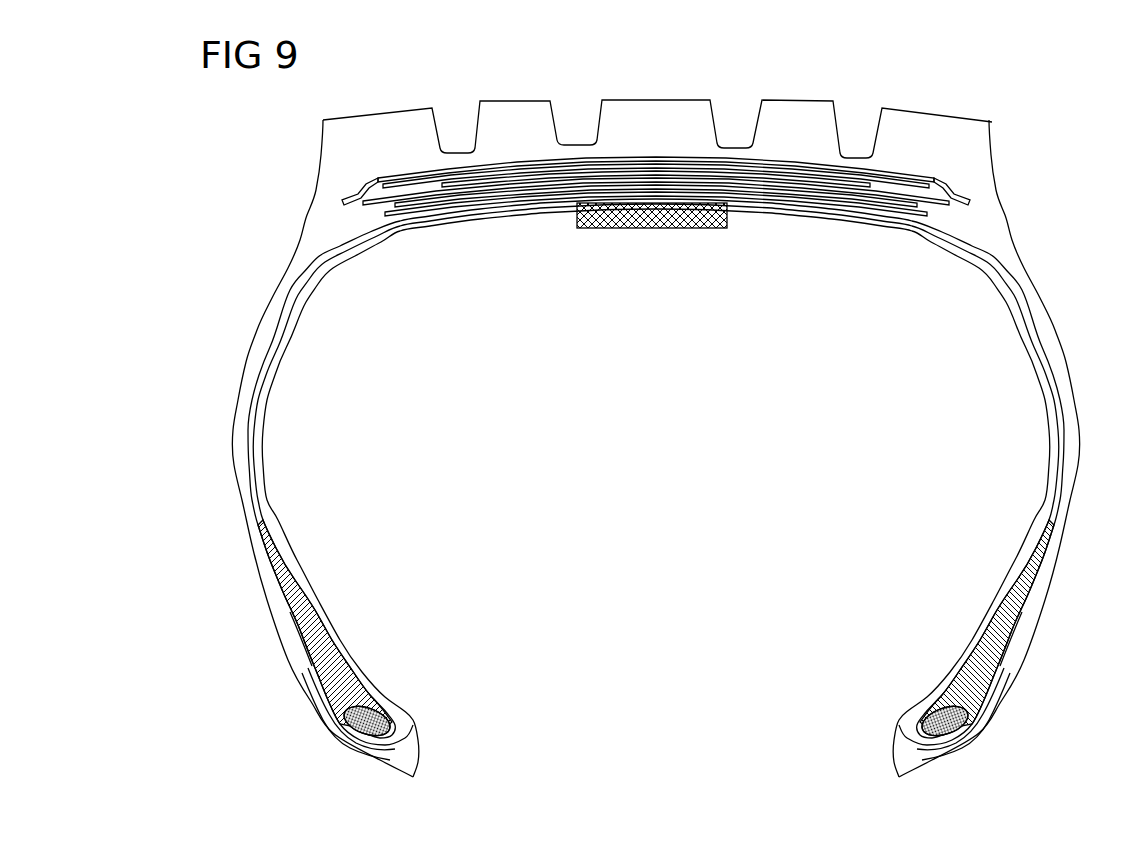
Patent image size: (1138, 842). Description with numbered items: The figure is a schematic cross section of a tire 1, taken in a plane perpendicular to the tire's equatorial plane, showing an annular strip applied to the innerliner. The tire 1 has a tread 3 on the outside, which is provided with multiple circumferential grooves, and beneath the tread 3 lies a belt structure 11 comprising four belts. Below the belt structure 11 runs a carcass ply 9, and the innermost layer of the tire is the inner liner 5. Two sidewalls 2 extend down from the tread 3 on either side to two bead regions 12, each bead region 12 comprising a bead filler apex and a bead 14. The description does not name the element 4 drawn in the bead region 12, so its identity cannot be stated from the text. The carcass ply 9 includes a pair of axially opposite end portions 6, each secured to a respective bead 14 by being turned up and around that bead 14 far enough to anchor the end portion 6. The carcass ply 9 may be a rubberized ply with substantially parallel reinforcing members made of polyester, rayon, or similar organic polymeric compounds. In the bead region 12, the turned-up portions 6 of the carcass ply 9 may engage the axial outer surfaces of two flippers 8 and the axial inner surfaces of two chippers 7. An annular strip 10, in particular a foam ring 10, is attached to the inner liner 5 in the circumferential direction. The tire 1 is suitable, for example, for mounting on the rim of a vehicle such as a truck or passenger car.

The tire 1 is at (271, 178).
The sidewall 2 is at (262, 318).
The tread 3 is at (513, 128).
The bead core 4 is at (388, 722).
The inner liner 5 is at (343, 267).
The end portion of carcass ply 6 is at (300, 642).
The chipper 7 is at (305, 683).
The flipper 8 is at (323, 715).
The carcass ply 9 is at (388, 232).
The annular strip 10 is at (672, 230).
The belt structure 11 is at (775, 188).
The bead region 12 is at (223, 615).
The bead 14 is at (327, 627).